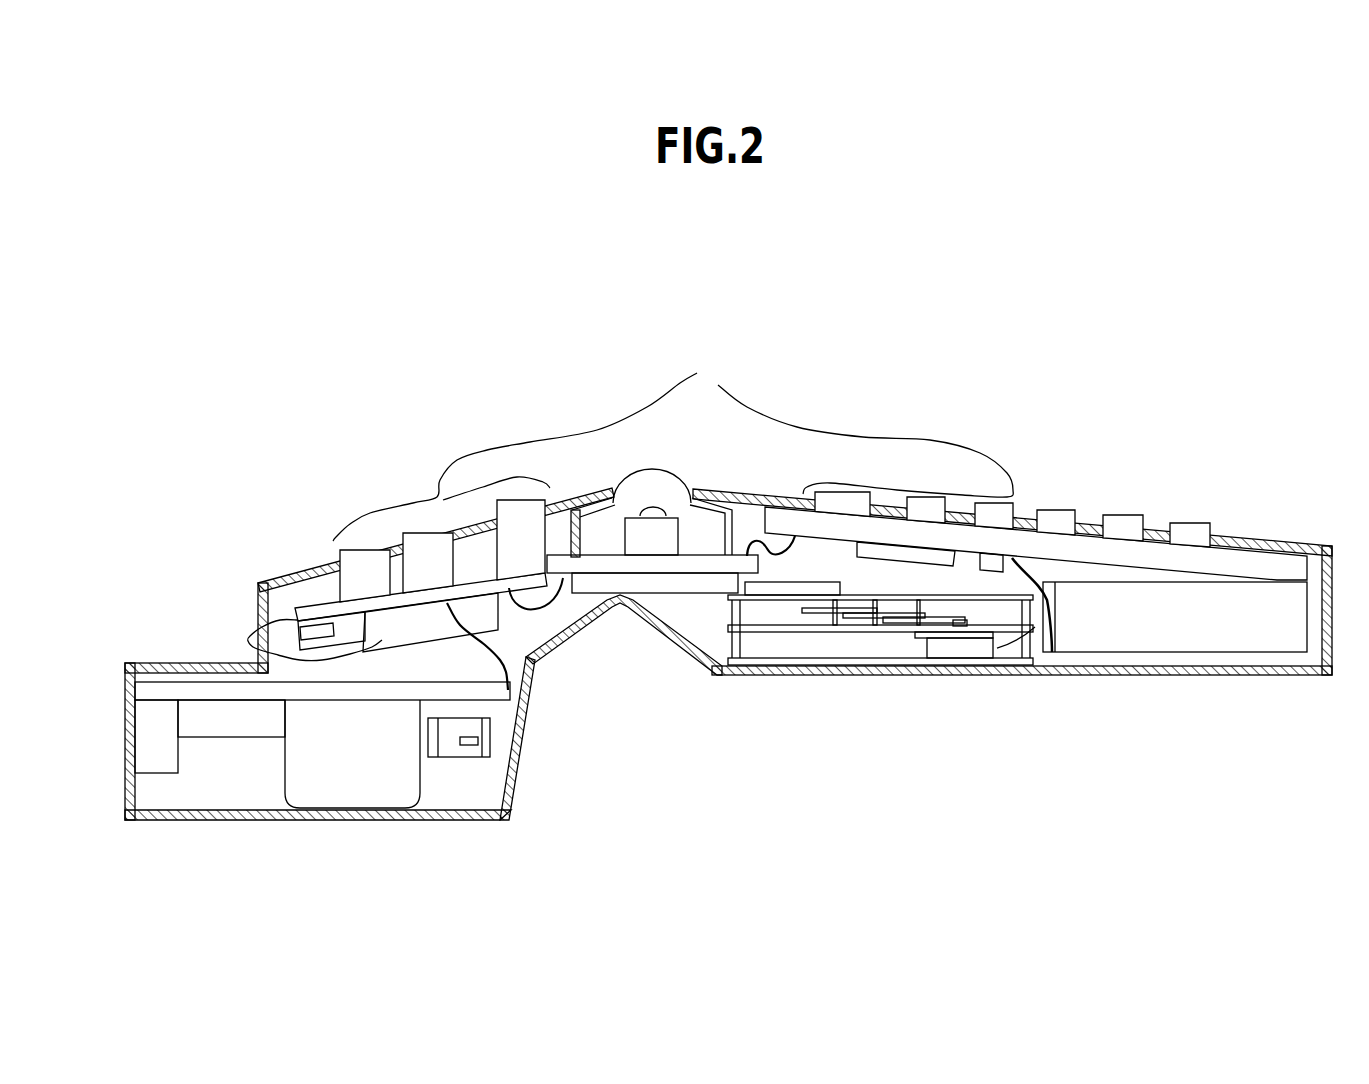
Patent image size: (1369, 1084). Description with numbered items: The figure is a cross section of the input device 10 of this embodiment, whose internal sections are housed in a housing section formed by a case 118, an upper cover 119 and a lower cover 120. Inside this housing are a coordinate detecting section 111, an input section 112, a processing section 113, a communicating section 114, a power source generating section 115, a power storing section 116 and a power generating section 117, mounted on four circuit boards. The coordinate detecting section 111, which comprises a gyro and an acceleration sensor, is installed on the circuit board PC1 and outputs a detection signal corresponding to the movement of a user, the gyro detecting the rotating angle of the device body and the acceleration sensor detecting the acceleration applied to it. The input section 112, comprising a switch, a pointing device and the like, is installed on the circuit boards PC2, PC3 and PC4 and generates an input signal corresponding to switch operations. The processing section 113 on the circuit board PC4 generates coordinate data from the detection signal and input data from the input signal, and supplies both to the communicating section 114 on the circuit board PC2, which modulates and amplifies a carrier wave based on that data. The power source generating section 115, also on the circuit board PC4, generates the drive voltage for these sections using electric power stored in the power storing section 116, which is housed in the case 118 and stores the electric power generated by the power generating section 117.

The input device 10 is at (257, 391).
The circuit board PC1 is at (150, 692).
The circuit board PC2 is at (307, 617).
The circuit board PC3 is at (563, 565).
The circuit board PC4 is at (1273, 560).
The coordinate detecting section 111 is at (270, 785).
The input section 112 is at (703, 533).
The processing section 113 is at (947, 555).
The communicating section 114 is at (250, 641).
The power source generating section 115 is at (1045, 568).
The power storing section 116 is at (1193, 628).
The power generating section 117 is at (894, 650).
The case 118 is at (1290, 676).
The upper cover 119 is at (1312, 545).
The lower cover 120 is at (503, 822).